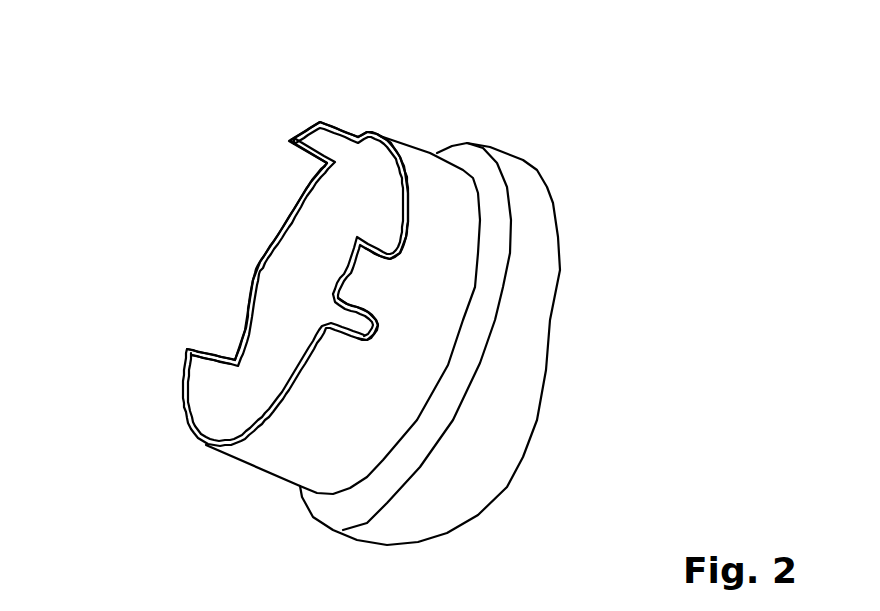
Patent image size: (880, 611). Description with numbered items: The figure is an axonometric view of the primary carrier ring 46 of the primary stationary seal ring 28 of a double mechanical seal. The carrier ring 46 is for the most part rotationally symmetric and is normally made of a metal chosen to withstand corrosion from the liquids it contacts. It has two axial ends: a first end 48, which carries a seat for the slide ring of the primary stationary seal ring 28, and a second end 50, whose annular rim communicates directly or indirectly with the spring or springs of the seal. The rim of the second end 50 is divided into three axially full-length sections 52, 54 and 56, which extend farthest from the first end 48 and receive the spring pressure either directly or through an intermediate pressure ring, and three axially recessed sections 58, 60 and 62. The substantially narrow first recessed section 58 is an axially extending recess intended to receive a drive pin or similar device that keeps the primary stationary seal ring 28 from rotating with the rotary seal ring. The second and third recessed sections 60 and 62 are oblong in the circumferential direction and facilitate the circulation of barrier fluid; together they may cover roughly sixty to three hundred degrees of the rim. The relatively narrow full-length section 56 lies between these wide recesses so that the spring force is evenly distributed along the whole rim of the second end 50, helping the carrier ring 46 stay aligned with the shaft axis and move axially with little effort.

The primary stationary seal ring 28 is at (222, 519).
The primary carrier ring 46 is at (397, 417).
The first end 48 is at (571, 271).
The second end 50 is at (145, 272).
The axially full-length section 52 is at (145, 405).
The axially full-length section 54 is at (524, 295).
The axially full-length section 56 is at (279, 95).
The first axially recessed section 58 is at (514, 358).
The second axially recessed section 60 is at (430, 164).
The third axially recessed section 62 is at (242, 237).